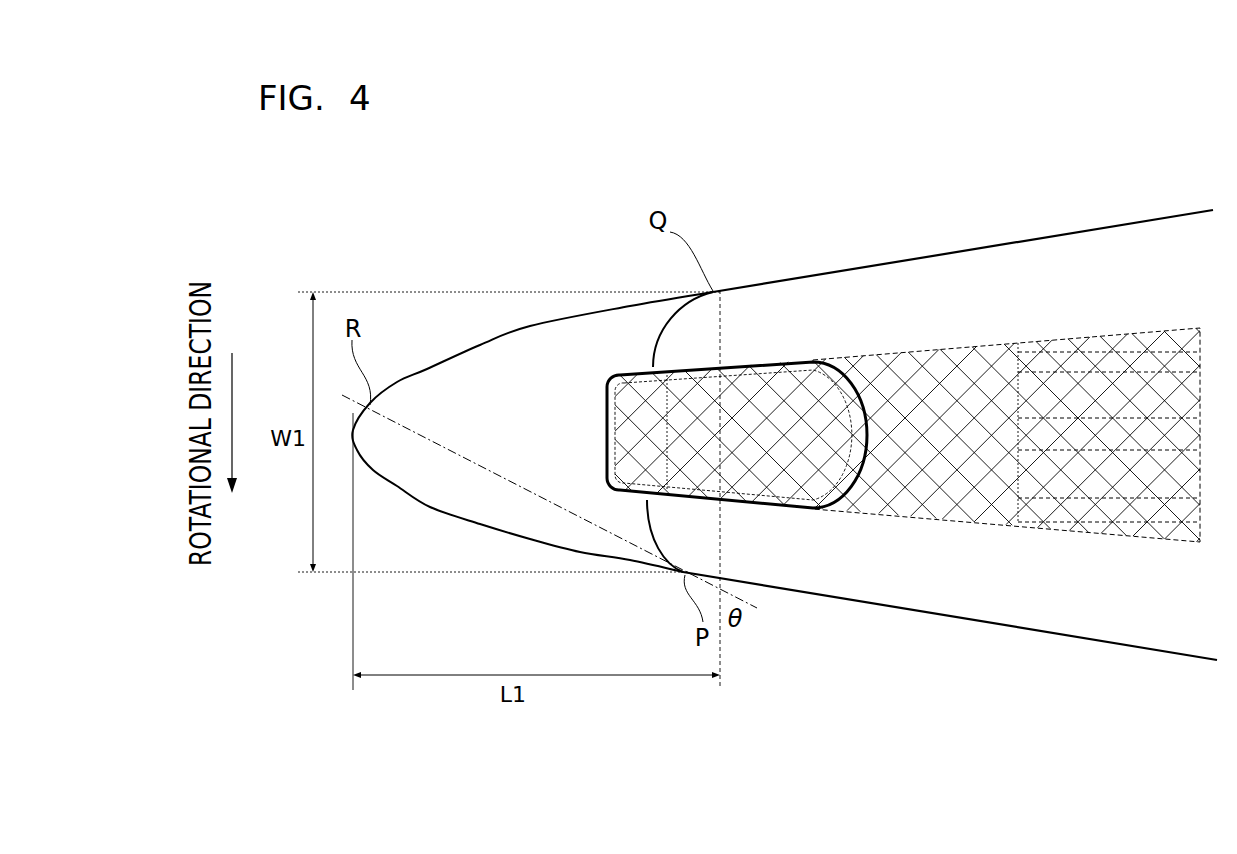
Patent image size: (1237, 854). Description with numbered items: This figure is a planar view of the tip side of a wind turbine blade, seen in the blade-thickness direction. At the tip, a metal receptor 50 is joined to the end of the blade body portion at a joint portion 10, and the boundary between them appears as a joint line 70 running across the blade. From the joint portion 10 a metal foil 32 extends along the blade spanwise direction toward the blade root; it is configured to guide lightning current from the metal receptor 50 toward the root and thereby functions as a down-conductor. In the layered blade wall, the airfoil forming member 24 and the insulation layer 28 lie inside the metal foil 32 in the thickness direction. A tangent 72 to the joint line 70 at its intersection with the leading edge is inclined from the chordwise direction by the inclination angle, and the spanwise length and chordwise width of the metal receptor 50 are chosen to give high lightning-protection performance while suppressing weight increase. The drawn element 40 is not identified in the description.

The joint portion 10 is at (721, 274).
The airfoil forming member 24 is at (893, 273).
The insulation layer 28 is at (1100, 430).
The metal foil 32 is at (984, 372).
The reinforcing member 40 is at (768, 360).
The metal receptor 50 is at (572, 322).
The joint line 70 is at (662, 327).
The tangent 72 is at (463, 458).